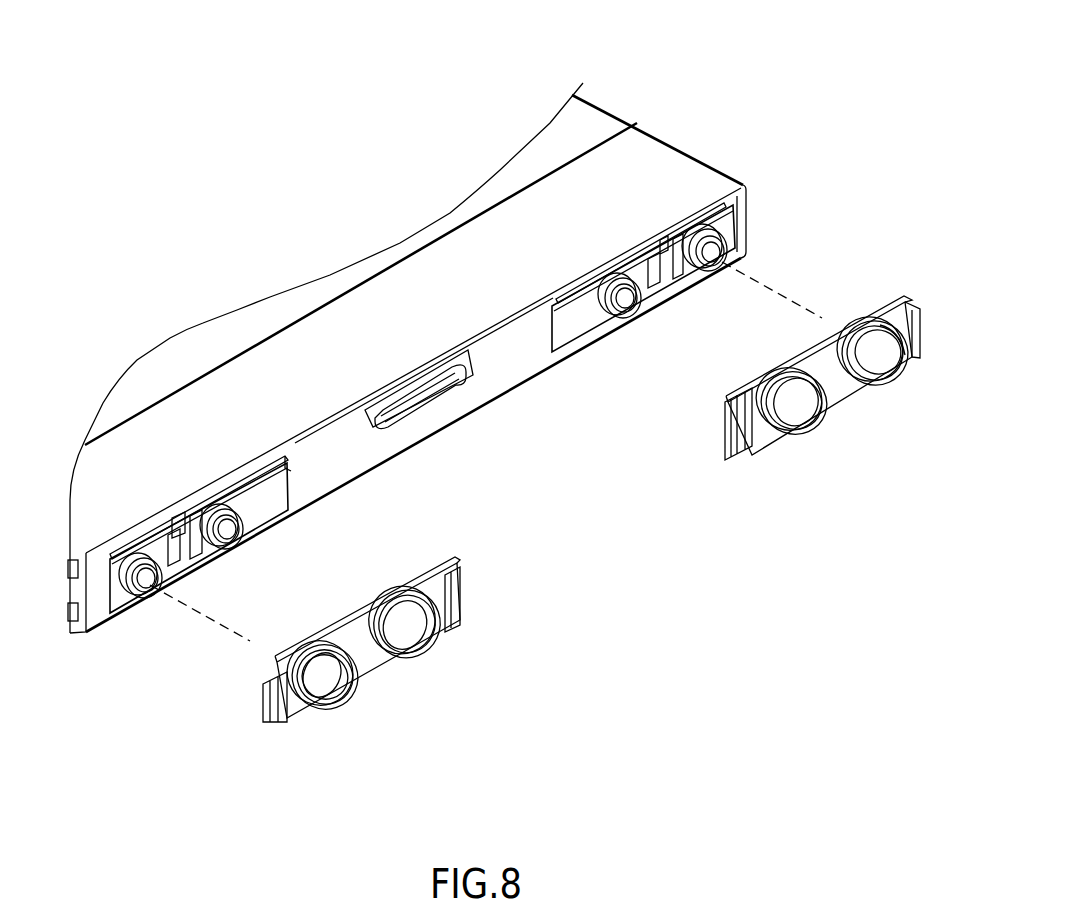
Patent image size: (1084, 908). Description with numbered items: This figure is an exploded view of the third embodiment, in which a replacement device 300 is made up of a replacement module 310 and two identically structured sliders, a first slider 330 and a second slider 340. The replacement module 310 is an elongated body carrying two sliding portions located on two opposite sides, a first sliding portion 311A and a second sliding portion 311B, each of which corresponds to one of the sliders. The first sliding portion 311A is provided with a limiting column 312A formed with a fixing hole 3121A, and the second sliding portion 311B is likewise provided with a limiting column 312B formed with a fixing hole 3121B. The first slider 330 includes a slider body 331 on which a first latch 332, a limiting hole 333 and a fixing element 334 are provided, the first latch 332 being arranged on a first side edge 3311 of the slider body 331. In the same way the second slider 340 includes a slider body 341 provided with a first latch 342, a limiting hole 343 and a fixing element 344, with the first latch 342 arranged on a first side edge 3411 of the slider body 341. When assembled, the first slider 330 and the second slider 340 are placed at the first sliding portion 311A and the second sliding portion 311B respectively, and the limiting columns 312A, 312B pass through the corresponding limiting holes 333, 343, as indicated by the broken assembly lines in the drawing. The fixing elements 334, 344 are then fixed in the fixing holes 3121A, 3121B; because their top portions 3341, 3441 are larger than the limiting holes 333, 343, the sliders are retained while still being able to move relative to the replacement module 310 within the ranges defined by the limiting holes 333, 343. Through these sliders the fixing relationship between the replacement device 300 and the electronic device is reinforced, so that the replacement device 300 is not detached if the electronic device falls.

The replacement device 300 is at (634, 84).
The replacement module 310 is at (417, 389).
The first sliding portion 311A is at (262, 462).
The second sliding portion 311B is at (712, 210).
The limiting column 312A is at (190, 579).
The limiting column 312B is at (659, 288).
The fixing hole 3121A is at (146, 582).
The fixing hole 3121B is at (711, 256).
The first slider 330 is at (331, 671).
The slider body 331 is at (368, 664).
The first latch 332 is at (277, 722).
The limiting hole 333 is at (355, 702).
The fixing element 334 is at (323, 669).
The top portion 3341 is at (341, 665).
The first side edge 3311 is at (278, 655).
The second slider 340 is at (832, 378).
The slider body 341 is at (830, 396).
The first latch 342 is at (912, 368).
The limiting hole 343 is at (860, 370).
The fixing element 344 is at (883, 317).
The top portion 3441 is at (884, 332).
The first side edge 3411 is at (918, 318).